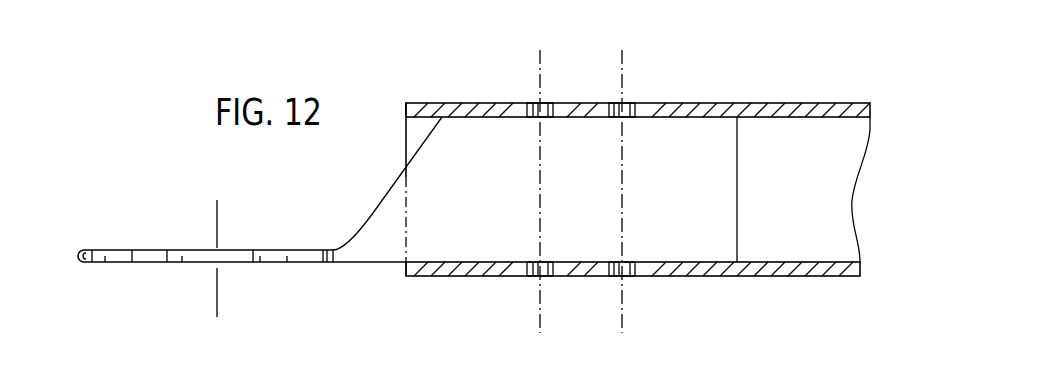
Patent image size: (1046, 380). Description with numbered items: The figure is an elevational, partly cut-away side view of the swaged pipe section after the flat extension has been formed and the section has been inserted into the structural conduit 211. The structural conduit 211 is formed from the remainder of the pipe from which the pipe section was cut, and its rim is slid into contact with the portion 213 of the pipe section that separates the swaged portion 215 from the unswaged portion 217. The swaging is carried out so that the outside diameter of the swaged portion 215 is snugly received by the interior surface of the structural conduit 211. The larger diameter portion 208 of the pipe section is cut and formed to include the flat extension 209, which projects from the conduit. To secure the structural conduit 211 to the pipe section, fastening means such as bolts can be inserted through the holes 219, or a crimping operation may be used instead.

The larger diameter portion 208 is at (377, 258).
The flat extension 209 is at (120, 258).
The structural conduit 211 is at (798, 103).
The portion 213 is at (406, 276).
The swaged portion 215 is at (470, 170).
The unswaged portion 217 is at (381, 222).
The holes 219 is at (548, 103).